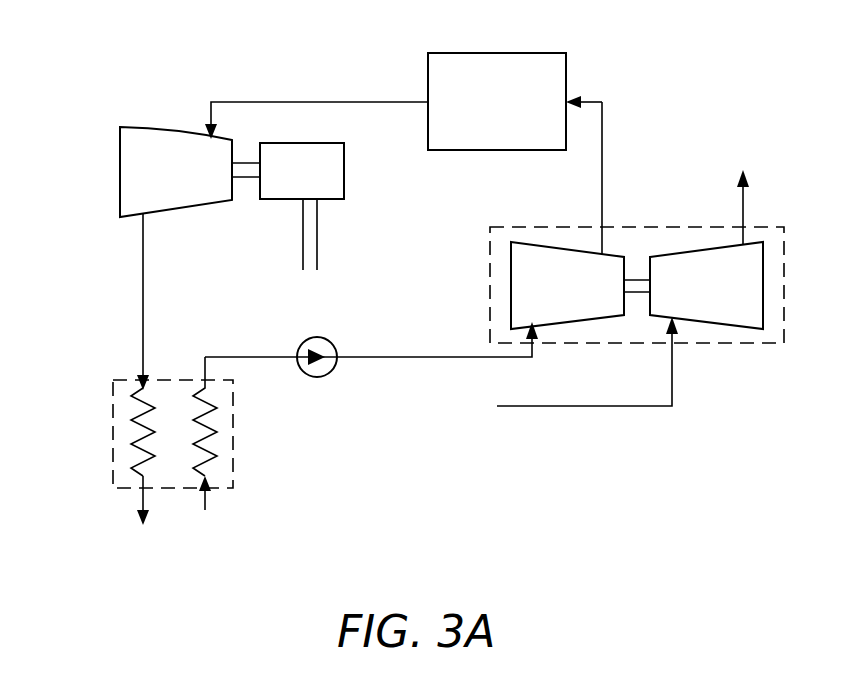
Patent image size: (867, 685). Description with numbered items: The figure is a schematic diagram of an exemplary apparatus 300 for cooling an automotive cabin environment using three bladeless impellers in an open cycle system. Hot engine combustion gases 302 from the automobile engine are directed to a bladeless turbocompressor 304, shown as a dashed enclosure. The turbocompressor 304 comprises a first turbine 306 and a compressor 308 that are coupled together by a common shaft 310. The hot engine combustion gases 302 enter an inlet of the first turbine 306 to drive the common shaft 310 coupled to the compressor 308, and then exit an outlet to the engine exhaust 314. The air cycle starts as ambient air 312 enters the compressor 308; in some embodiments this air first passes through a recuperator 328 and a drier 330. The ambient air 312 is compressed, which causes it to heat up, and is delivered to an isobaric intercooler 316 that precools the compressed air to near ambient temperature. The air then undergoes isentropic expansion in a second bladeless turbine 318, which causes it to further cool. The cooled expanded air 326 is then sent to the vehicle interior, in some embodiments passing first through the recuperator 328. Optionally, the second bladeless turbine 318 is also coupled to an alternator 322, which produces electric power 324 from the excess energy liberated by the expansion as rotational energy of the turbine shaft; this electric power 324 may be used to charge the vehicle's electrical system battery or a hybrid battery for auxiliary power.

The apparatus 300 is at (650, 37).
The hot engine combustion gases 302 is at (493, 440).
The bladeless turbocompressor 304 is at (710, 343).
The first turbine 306 is at (715, 325).
The compressor 308 is at (580, 250).
The common shaft 310 is at (634, 275).
The ambient air 312 is at (232, 545).
The engine exhaust 314 is at (727, 118).
The isobaric intercooler 316 is at (434, 73).
The second bladeless turbine 318 is at (140, 127).
The alternator 322 is at (302, 145).
The electric power 324 is at (338, 270).
The cooled expanded air 326 is at (125, 520).
The recuperator 328 is at (130, 382).
The drier 330 is at (300, 340).